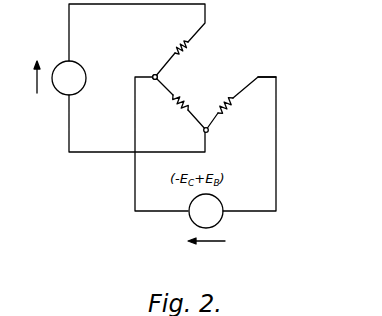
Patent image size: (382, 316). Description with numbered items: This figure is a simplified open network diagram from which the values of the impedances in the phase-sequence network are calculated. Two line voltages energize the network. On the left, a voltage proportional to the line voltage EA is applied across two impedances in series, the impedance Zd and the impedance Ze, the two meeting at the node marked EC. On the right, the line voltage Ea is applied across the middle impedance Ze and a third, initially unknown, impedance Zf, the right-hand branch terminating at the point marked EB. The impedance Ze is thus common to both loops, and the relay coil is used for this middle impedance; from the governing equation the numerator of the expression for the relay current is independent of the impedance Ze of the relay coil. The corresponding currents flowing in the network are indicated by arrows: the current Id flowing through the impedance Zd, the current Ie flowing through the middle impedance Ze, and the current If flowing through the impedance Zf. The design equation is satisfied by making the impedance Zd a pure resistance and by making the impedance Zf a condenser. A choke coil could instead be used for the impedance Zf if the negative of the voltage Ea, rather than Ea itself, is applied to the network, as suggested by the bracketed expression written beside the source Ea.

The line voltage E_A EA is at (69, 78).
The voltage E_B terminal EB is at (267, 70).
The voltage E_C node EC is at (141, 70).
The impedance Z_d Zd is at (190, 55).
The impedance Z_e Ze is at (186, 95).
The impedance Z_f Zf is at (222, 96).
The current in impedance Z_d Id is at (180, 30).
The current in impedance Z_e Ie is at (176, 117).
The current in impedance Z_f If is at (247, 111).
The line voltage E_a Ea is at (206, 211).